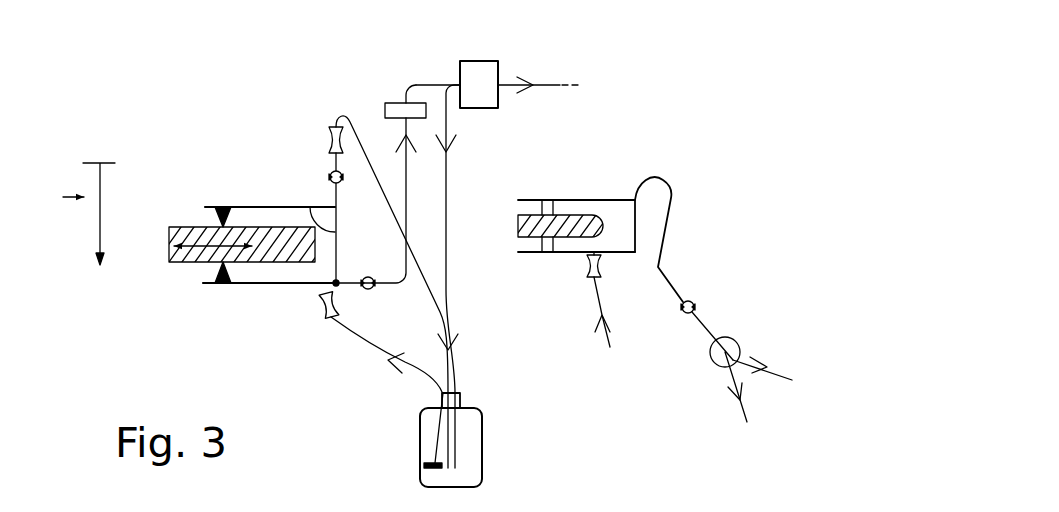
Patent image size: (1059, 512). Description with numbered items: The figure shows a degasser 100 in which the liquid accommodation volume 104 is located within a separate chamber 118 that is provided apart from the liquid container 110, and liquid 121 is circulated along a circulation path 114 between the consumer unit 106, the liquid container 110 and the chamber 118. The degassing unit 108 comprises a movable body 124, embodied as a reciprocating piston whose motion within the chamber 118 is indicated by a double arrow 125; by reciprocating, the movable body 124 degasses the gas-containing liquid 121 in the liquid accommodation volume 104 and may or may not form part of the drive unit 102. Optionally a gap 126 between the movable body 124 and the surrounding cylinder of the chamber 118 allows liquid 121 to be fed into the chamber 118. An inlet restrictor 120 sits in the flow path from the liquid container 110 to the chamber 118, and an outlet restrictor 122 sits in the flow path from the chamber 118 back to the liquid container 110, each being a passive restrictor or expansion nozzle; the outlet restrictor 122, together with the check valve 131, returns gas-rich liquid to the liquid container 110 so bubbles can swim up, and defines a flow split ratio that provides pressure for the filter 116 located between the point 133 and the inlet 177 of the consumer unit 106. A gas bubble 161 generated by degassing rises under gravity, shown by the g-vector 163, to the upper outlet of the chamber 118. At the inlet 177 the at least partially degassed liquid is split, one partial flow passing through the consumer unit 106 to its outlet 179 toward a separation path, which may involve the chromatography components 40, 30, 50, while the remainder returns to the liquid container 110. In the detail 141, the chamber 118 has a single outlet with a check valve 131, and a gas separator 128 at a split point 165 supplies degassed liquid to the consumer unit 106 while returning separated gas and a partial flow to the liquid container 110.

The degasser 100 is at (144, 101).
The drive unit 102 is at (195, 196).
The liquid accommodation volume 104 is at (262, 217).
The consumer unit 106 is at (500, 60).
The degassing unit 108 is at (170, 269).
The liquid container 110 is at (482, 426).
The circulation path 114 is at (383, 287).
The filter 116 is at (388, 102).
The chamber 118 is at (247, 287).
The inlet restrictor 120 is at (317, 308).
The liquid 121 is at (273, 278).
The outlet restrictor 122 is at (328, 177).
The movable body 124 is at (197, 226).
The double arrow 125 is at (210, 250).
The gap 126 is at (236, 210).
The gas separator 128 is at (724, 337).
The check valve 131 is at (329, 148).
The path reference point 133 is at (368, 276).
The detail 141 is at (634, 186).
The gas bubble 161 is at (331, 226).
The g-vector 163 is at (100, 212).
The split point 165 is at (745, 340).
The inlet 177 is at (457, 84).
The outlet 179 is at (500, 84).
The chromatographic separation component 40 is at (605, 83).
The chromatographic separation component 30 is at (643, 83).
The chromatographic separation component 50 is at (675, 83).